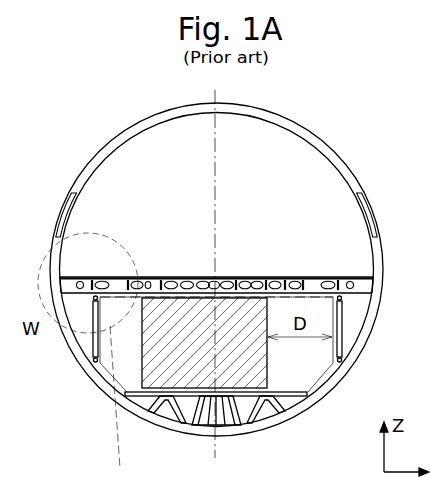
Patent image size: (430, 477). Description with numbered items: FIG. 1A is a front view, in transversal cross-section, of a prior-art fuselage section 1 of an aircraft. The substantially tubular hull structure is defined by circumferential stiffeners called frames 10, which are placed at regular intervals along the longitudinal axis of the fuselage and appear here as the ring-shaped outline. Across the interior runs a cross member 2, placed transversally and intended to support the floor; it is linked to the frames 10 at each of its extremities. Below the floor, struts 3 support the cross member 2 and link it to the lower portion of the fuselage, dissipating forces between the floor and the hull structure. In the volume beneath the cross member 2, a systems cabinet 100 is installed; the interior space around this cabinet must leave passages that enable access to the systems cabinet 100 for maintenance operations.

The fuselage section 1 is at (86, 128).
The frame 10 is at (344, 158).
The cross member 2 is at (315, 277).
The strut 3 is at (339, 320).
The systems cabinet 100 is at (243, 353).